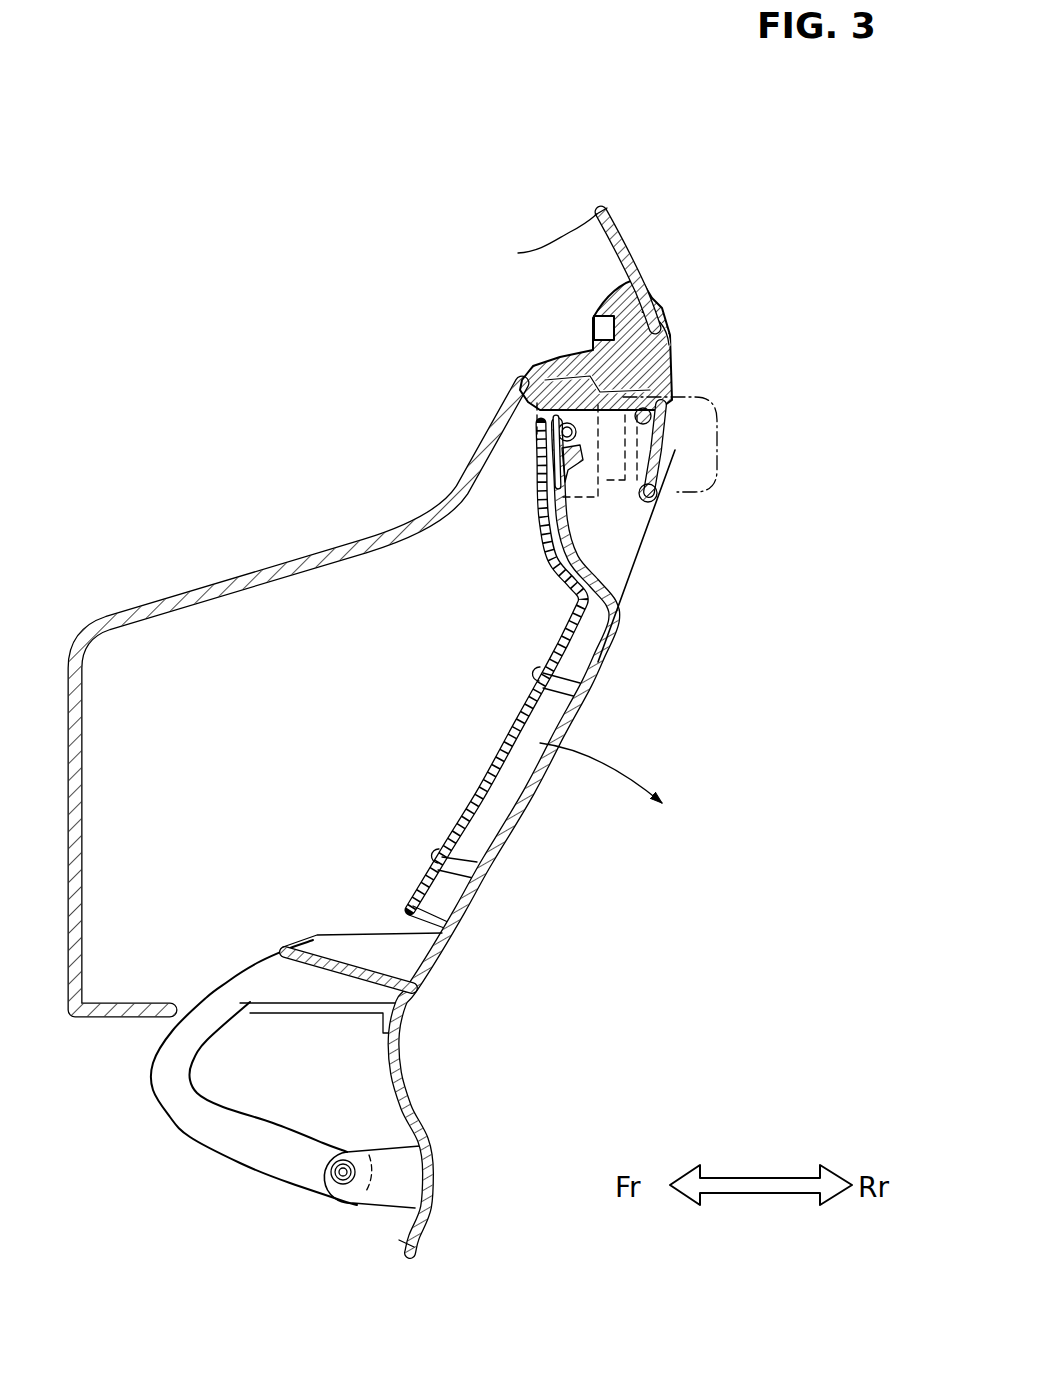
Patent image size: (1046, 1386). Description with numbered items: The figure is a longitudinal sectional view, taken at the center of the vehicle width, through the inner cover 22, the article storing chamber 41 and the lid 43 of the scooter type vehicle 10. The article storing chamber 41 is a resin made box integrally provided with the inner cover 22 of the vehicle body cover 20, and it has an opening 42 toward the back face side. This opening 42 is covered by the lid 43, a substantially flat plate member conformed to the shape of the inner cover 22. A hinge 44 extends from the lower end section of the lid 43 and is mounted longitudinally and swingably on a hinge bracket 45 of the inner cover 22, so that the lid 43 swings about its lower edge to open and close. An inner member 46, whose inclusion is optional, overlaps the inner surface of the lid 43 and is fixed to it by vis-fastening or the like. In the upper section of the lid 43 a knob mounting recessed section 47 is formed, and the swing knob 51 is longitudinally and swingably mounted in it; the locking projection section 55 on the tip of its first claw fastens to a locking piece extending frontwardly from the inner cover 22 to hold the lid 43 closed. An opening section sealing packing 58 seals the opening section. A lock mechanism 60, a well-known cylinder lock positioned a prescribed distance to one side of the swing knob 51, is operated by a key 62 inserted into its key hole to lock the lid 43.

The vehicle door structure 10 is at (305, 243).
The vehicle body cover 20 is at (680, 176).
The inner cover 22 is at (620, 224).
The article storing chamber 41 is at (263, 565).
The opening 42 is at (661, 338).
The lid 43 is at (537, 807).
The hinge 44 is at (193, 1127).
The hinge bracket 45 is at (385, 1190).
The inner member 46 is at (476, 797).
The knob mounting recessed section 47 is at (597, 563).
The swing knob 51 is at (677, 465).
The locking projection section 55 is at (520, 372).
The opening section sealing packing 58 is at (640, 276).
The lock mechanism 60 is at (612, 484).
The key 62 is at (717, 430).